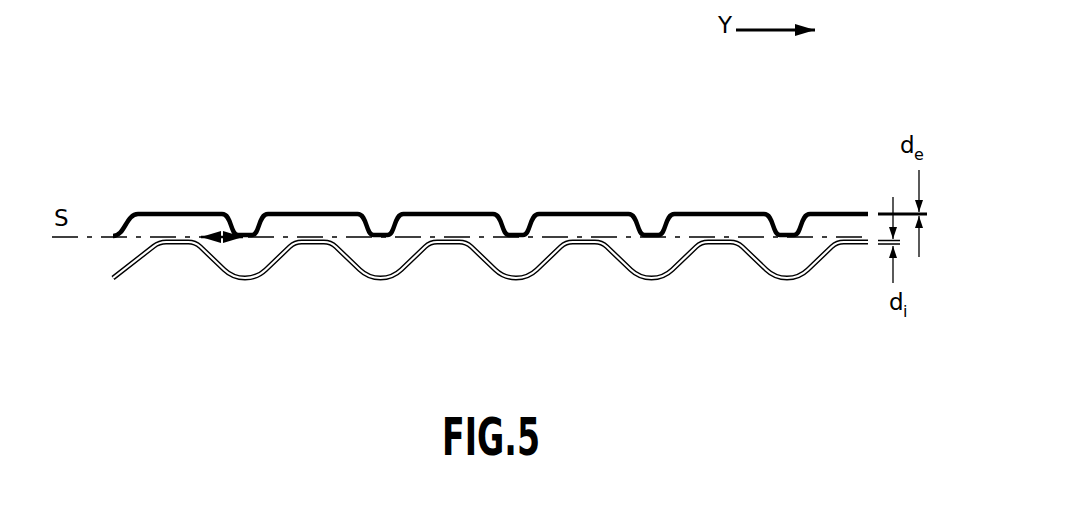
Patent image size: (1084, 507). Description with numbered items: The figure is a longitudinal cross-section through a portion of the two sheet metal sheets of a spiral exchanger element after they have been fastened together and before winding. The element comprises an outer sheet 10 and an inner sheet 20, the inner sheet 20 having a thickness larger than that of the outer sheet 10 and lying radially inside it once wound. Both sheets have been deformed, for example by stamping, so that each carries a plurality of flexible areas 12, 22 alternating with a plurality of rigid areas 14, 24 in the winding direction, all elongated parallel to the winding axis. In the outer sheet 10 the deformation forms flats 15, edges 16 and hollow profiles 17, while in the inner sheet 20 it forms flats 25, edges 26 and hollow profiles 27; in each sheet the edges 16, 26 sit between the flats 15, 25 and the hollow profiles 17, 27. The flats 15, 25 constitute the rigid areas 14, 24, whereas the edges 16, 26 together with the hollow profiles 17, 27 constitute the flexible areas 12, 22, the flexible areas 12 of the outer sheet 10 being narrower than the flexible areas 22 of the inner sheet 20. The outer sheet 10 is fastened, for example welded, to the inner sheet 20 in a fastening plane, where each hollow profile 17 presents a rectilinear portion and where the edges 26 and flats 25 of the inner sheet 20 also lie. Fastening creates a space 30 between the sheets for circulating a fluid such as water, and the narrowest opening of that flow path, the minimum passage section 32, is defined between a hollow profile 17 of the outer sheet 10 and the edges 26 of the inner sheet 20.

The outer sheet 10 is at (166, 211).
The flexible areas 12 is at (251, 170).
The rigid areas 14 is at (204, 200).
The flats 15 is at (187, 211).
The edges 16 is at (136, 212).
The hollow profiles 17 is at (246, 232).
The inner sheet 20 is at (172, 244).
The flexible areas 22 is at (245, 283).
The rigid areas 24 is at (318, 247).
The flats 25 is at (187, 244).
The edges 26 is at (163, 246).
The hollow profiles 27 is at (249, 281).
The space 30 is at (153, 222).
The minimum passage section 32 is at (223, 241).